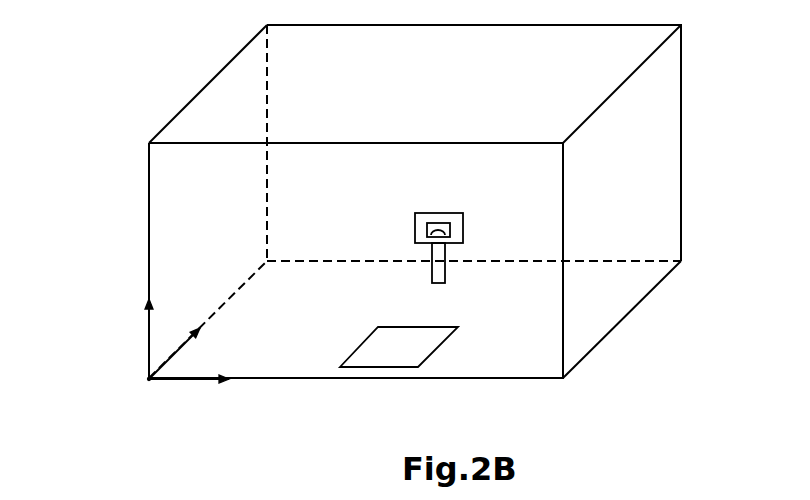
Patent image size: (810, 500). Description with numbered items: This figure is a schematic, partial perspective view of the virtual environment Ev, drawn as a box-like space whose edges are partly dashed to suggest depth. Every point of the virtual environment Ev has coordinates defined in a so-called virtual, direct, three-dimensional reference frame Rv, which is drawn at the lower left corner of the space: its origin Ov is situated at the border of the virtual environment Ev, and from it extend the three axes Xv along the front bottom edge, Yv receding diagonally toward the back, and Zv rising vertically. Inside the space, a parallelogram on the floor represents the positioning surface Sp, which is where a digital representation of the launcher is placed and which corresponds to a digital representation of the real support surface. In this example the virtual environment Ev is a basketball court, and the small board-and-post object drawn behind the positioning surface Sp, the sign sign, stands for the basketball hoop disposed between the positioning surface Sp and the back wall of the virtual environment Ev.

The virtual environment Ev is at (684, 141).
The virtual three-dimensional reference frame Rv is at (126, 357).
The origin of the virtual reference frame Ov is at (135, 393).
The X axis of the virtual reference frame Xv is at (189, 395).
The Y axis of the virtual reference frame Yv is at (191, 353).
The Z axis of the virtual reference frame Zv is at (133, 339).
The positioning surface Sp is at (406, 355).
The virtual signboard object sign is at (439, 248).